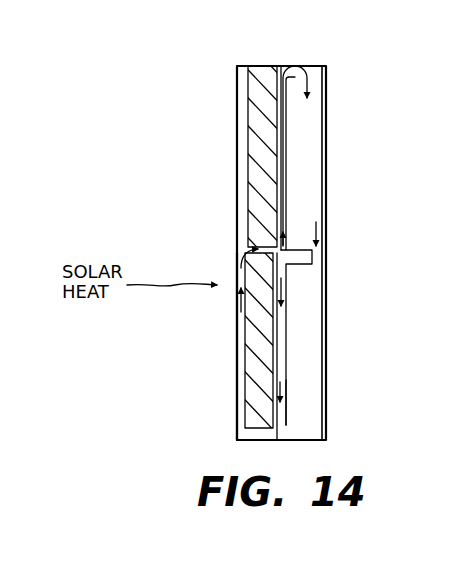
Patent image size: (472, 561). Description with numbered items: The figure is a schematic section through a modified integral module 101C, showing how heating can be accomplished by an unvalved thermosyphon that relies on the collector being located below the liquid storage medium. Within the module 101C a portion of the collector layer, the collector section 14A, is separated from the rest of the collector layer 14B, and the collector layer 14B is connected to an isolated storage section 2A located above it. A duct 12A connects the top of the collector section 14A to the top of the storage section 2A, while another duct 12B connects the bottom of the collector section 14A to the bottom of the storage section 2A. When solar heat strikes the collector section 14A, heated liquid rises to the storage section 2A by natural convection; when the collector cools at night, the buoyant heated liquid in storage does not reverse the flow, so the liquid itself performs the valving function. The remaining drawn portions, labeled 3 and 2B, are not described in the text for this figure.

The solar collector housing 3 is at (277, 359).
The storage section 2A is at (308, 186).
The lower glazing / air space 2B is at (305, 406).
The collector section 14A is at (245, 412).
The collector layer 14B is at (248, 176).
The duct 12A is at (260, 226).
The duct 12B is at (286, 330).
The module 101C is at (237, 371).